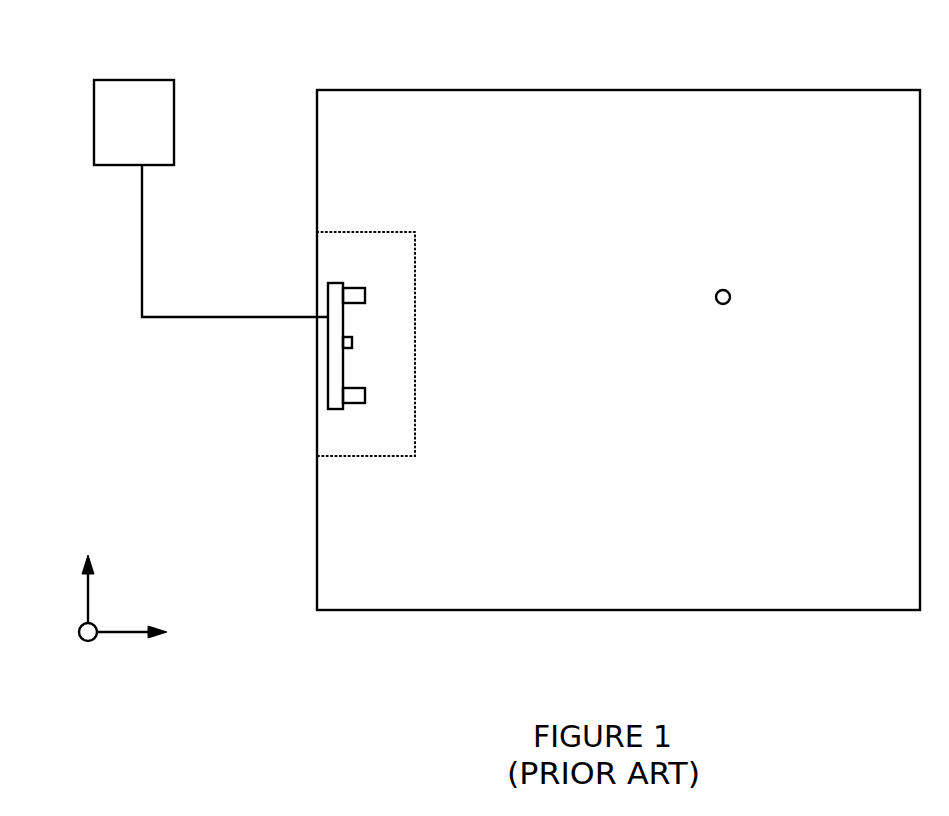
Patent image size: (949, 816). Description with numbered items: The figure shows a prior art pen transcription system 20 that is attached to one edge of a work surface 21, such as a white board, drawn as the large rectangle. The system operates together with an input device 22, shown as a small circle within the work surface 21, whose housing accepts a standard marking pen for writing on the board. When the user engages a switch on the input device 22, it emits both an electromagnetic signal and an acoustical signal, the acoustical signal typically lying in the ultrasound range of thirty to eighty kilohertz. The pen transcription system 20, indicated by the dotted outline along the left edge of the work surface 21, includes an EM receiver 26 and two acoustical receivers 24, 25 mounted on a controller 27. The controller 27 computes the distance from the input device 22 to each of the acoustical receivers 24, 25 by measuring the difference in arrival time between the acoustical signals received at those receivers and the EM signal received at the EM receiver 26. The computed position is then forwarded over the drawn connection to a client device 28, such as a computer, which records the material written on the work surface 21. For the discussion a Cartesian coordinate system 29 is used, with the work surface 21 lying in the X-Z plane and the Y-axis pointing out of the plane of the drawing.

The pen transcription system 20 is at (380, 233).
The work surface 21 is at (627, 100).
The input device 22 is at (722, 289).
The acoustical receiver 24 is at (353, 291).
The acoustical receiver 25 is at (354, 393).
The EM receiver 26 is at (353, 340).
The controller 27 is at (332, 406).
The client device 28 is at (102, 97).
The Cartesian coordinate system 29 is at (83, 640).